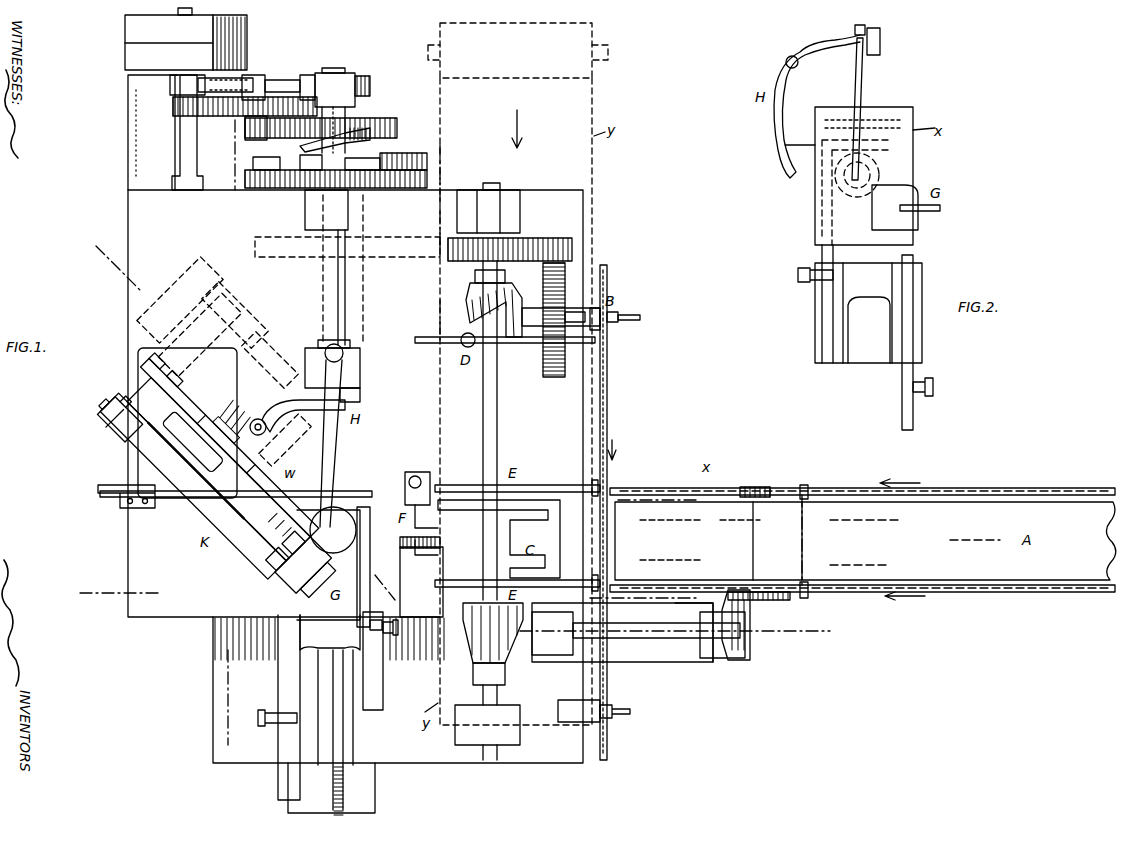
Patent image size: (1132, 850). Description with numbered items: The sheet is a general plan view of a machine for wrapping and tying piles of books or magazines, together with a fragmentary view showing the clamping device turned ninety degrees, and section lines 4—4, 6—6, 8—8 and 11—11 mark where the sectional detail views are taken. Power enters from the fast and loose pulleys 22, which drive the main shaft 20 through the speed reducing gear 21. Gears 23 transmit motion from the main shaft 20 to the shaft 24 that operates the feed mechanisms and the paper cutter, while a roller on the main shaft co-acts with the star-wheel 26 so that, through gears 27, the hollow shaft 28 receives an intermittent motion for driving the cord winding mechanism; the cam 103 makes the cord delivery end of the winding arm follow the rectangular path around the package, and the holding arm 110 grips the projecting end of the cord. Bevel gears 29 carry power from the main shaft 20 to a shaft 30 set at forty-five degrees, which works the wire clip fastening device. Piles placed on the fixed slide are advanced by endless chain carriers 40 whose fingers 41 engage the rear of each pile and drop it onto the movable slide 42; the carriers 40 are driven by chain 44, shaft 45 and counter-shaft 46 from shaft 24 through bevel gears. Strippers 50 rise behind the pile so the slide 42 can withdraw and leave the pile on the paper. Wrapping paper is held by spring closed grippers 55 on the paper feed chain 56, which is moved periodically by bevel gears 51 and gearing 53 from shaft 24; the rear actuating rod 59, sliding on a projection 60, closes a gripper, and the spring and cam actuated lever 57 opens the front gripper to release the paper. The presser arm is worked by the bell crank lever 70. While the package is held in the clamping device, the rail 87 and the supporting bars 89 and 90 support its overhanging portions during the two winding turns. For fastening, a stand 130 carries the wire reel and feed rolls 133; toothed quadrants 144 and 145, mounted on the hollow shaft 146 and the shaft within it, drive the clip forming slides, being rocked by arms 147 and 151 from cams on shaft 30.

In FIG. 1, the fast and loose pulleys 22 is at (125, 50).
In FIG. 1, the speed reducing gear 21 is at (283, 118).
In FIG. 1, the main shaft 20 is at (333, 72).
In FIG. 1, the cam 103 is at (355, 133).
In FIG. 1, the star-wheel 26 is at (390, 155).
In FIG. 1, the gears 27 is at (320, 180).
In FIG. 1, the section line 6— 6 is at (224, 714).
In FIG. 1, the section line 8— 8 is at (436, 149).
In FIG. 1, the section line 11— 11 is at (99, 252).
In FIG. 1, the section line 4— 4 is at (390, 605).
In FIG. 1, the hollow shaft 28 is at (345, 285).
In FIG. 1, the gears 23 is at (460, 240).
In FIG. 1, the shaft 30 is at (224, 361).
In FIG. 1, the holding arm 110 is at (334, 456).
In FIG. 1, the bevel gears 29 is at (298, 392).
In FIG. 1, the arm 147 is at (112, 429).
In FIG. 1, the arm 151 is at (138, 387).
In FIG. 1, the stand 130 is at (218, 469).
In FIG. 1, the hollow shaft 146 is at (200, 511).
In FIG. 1, the feed rolls 133 is at (212, 402).
In FIG. 1, the toothed quadrant 145 is at (272, 572).
In FIG. 1, the toothed quadrant 144 is at (288, 588).
In FIG. 1, the rail 87 is at (330, 505).
In FIG. 2, the rail 87 is at (798, 145).
In FIG. 1, the bell crank lever 70 is at (118, 500).
In FIG. 1, the supporting bar 89 is at (300, 672).
In FIG. 2, the supporting bar 89 is at (828, 305).
In FIG. 1, the supporting bar 90 is at (374, 682).
In FIG. 2, the supporting bar 90 is at (915, 288).
In FIG. 1, the shaft 24 is at (497, 415).
In FIG. 1, the bevel gears 51 is at (508, 296).
In FIG. 1, the gearing 53 is at (555, 378).
In FIG. 1, the paper feed chain 56 is at (608, 382).
In FIG. 1, the spring closed grippers 55 is at (608, 335).
In FIG. 1, the actuating rod 59 is at (618, 312).
In FIG. 1, the projection 60 is at (640, 318).
In FIG. 1, the strippers 50 is at (600, 487).
In FIG. 1, the counter-shaft 46 is at (612, 645).
In FIG. 1, the shaft 45 is at (748, 632).
In FIG. 1, the chain 44 is at (780, 600).
In FIG. 1, the movable slide 42 is at (712, 505).
In FIG. 1, the endless chain carriers 40 is at (950, 493).
In FIG. 1, the fingers 41 is at (810, 490).
In FIG. 1, the spring and cam actuated lever 57 is at (618, 709).